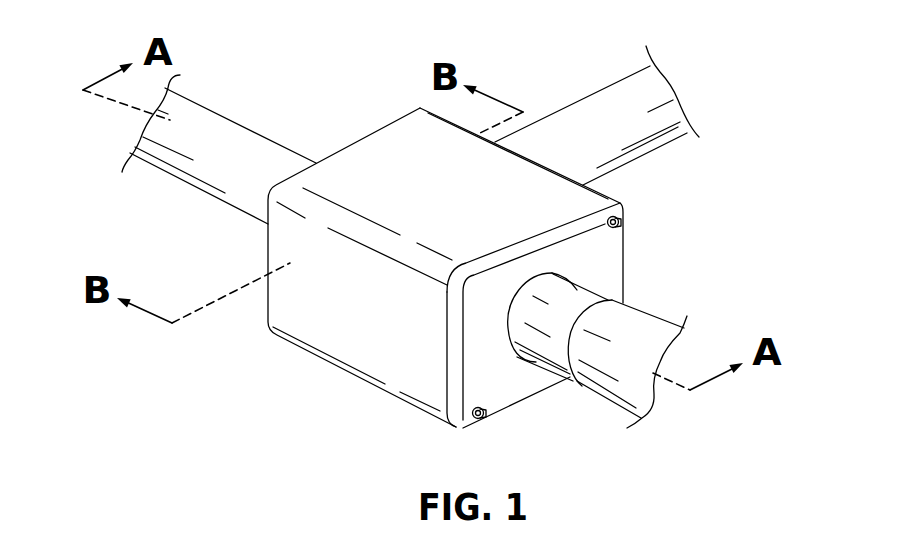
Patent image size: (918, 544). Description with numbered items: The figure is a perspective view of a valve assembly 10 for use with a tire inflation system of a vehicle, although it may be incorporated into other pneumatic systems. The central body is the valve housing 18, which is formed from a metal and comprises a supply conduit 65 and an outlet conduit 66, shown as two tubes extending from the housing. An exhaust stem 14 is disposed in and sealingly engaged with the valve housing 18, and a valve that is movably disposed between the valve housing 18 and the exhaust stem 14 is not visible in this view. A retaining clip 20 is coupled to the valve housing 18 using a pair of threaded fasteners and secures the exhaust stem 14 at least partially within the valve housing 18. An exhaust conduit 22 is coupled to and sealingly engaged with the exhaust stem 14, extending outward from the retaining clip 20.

The valve assembly 10 is at (772, 110).
The exhaust stem 14 is at (541, 315).
The valve housing 18 is at (320, 303).
The retaining clip 20 is at (610, 256).
The exhaust conduit 22 is at (626, 318).
The supply conduit 65 is at (232, 128).
The outlet conduit 66 is at (572, 112).